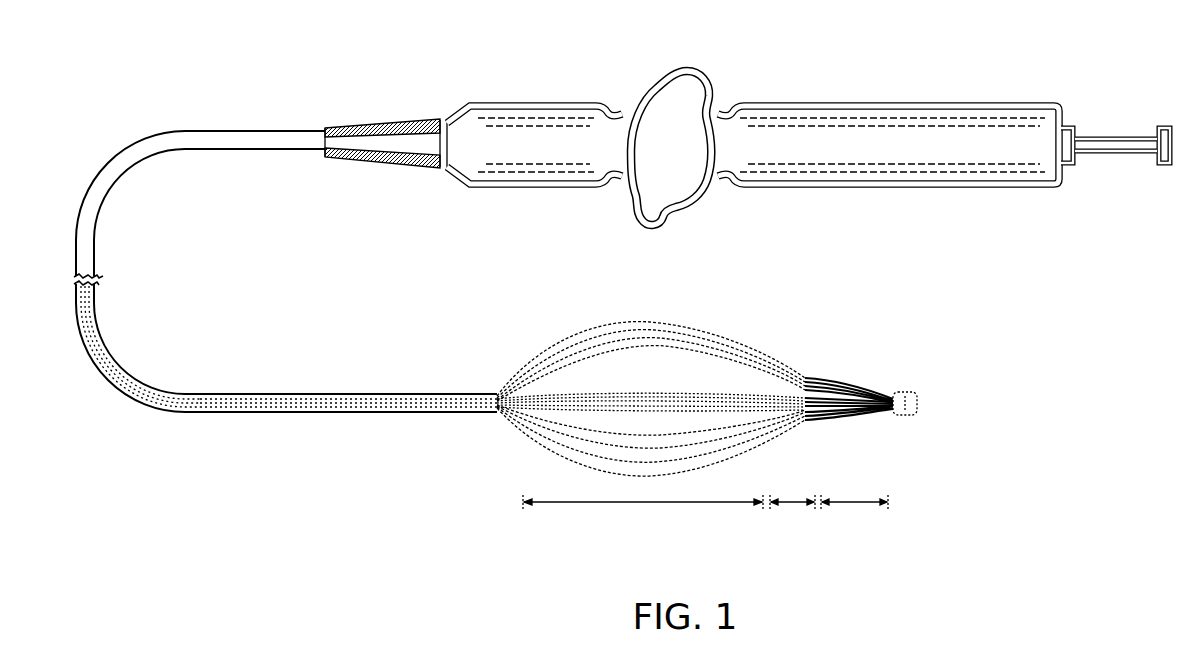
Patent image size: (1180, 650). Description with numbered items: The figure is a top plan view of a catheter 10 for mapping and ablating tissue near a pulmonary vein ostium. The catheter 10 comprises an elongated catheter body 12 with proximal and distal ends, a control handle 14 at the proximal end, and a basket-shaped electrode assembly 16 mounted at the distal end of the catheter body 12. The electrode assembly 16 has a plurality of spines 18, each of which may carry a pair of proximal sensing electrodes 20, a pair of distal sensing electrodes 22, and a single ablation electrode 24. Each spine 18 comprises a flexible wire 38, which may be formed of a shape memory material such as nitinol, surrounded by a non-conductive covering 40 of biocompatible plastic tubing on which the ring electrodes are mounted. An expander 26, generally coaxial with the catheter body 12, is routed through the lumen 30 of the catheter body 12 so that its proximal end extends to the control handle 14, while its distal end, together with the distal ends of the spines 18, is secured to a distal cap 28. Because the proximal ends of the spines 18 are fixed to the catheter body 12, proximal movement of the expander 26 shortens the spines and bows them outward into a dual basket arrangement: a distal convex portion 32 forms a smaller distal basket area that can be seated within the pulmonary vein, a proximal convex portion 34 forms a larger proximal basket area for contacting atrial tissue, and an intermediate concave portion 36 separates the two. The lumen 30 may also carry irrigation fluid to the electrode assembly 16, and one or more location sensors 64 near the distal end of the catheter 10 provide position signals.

The catheter 10 is at (336, 44).
The catheter body 12 is at (156, 130).
The control handle 14 is at (832, 188).
The basket-shaped electrode assembly 16 is at (762, 324).
The spines 18 is at (600, 326).
The proximal sensing electrodes 20 is at (690, 332).
The distal sensing electrodes 22 is at (780, 421).
The ablation electrode 24 is at (740, 354).
The expander 26 is at (580, 402).
The distal cap 28 is at (913, 398).
The lumen 30 is at (333, 394).
The distal convex portion 32 is at (856, 504).
The proximal convex portion 34 is at (650, 504).
The intermediate concave portion 36 is at (795, 504).
The flexible wire 38 is at (851, 385).
The non-conductive covering 40 is at (790, 377).
The location sensors 64 is at (911, 412).